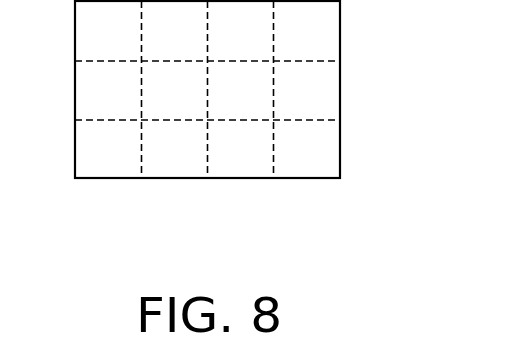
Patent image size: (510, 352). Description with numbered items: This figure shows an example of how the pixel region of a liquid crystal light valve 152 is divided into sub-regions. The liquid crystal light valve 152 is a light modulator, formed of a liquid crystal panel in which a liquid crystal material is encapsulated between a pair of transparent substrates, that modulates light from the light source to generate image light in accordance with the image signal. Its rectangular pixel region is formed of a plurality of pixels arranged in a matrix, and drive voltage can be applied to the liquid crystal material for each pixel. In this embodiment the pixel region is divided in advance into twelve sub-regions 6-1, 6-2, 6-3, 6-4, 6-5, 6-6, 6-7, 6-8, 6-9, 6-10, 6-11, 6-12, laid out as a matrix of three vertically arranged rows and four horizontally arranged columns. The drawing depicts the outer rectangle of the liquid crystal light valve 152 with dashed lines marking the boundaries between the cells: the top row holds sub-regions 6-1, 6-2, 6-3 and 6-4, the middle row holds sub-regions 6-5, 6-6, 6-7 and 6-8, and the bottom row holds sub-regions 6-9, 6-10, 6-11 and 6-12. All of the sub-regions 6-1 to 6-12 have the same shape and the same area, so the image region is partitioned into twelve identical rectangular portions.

The liquid crystal light valve 152 is at (340, 51).
The sub-region 6-1 is at (108, 31).
The sub-region 6-2 is at (175, 31).
The sub-region 6-3 is at (241, 31).
The sub-region 6-4 is at (307, 31).
The sub-region 6-5 is at (108, 90).
The sub-region 6-6 is at (175, 90).
The sub-region 6-7 is at (241, 90).
The sub-region 6-8 is at (307, 90).
The sub-region 6-9 is at (108, 149).
The sub-region 6-10 is at (175, 149).
The sub-region 6-11 is at (241, 149).
The sub-region 6-12 is at (307, 149).